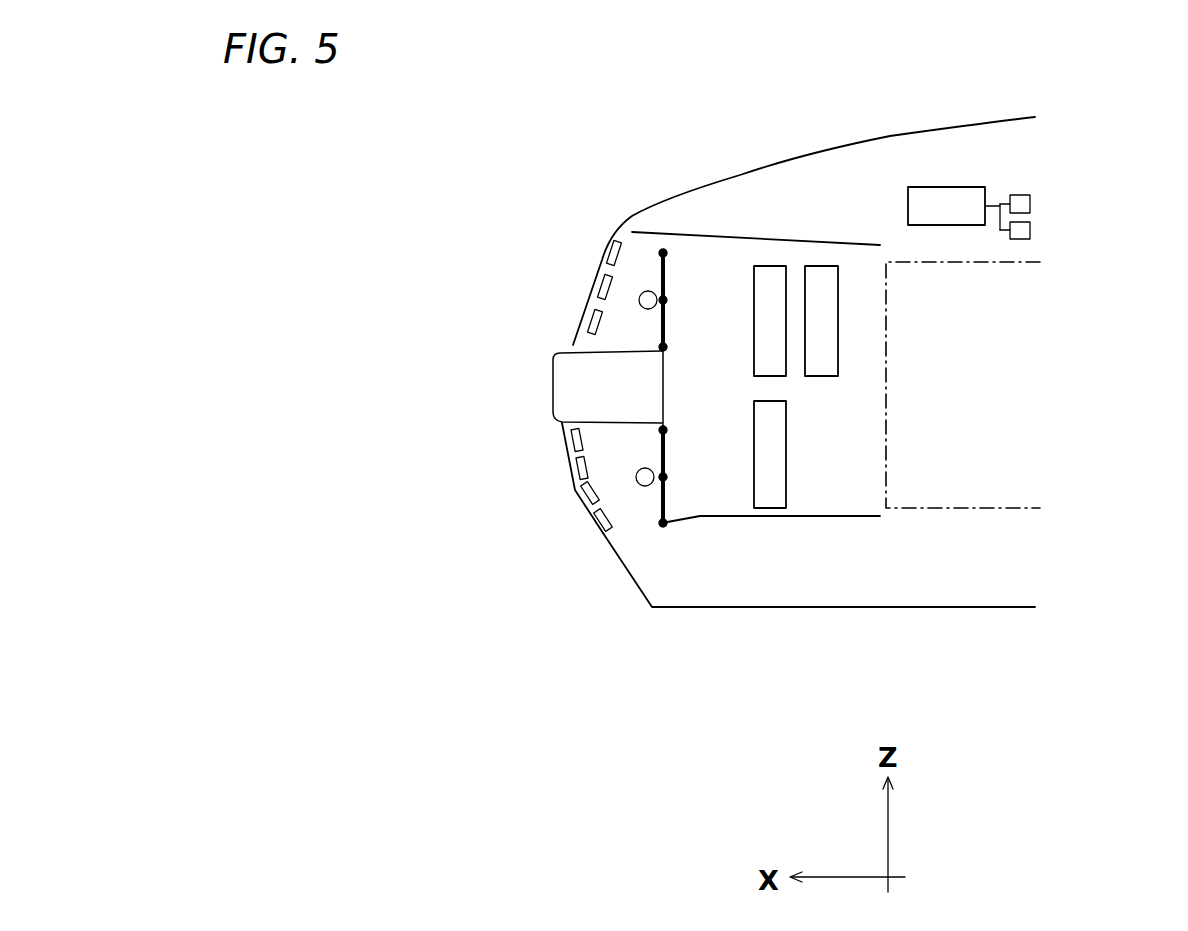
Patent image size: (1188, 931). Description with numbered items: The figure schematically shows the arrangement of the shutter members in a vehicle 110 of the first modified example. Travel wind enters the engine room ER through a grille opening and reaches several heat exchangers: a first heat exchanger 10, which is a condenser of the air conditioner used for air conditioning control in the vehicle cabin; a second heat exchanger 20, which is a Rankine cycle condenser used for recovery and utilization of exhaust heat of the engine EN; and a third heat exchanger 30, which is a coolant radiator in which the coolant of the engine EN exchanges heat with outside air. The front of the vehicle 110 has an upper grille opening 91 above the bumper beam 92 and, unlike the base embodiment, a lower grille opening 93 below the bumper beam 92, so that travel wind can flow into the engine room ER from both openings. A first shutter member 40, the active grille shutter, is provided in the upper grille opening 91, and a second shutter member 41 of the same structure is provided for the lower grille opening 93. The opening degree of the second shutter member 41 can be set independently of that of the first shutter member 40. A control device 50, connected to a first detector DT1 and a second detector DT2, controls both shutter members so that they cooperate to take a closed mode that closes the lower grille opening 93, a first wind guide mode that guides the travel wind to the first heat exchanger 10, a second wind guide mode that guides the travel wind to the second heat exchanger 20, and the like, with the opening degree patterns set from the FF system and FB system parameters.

The vehicle 110 is at (505, 87).
The first heat exchanger 10 is at (766, 270).
The second heat exchanger 20 is at (772, 506).
The third heat exchanger 30 is at (827, 270).
The first shutter member 40 is at (663, 253).
The second shutter member 41 is at (645, 523).
The control device 50 is at (961, 188).
The upper grille opening 91 is at (600, 268).
The bumper beam 92 is at (558, 392).
The lower grille opening 93 is at (573, 490).
The first detector DT1 is at (1022, 195).
The second detector DT2 is at (1030, 236).
The engine EN is at (963, 385).
The engine room ER is at (853, 484).